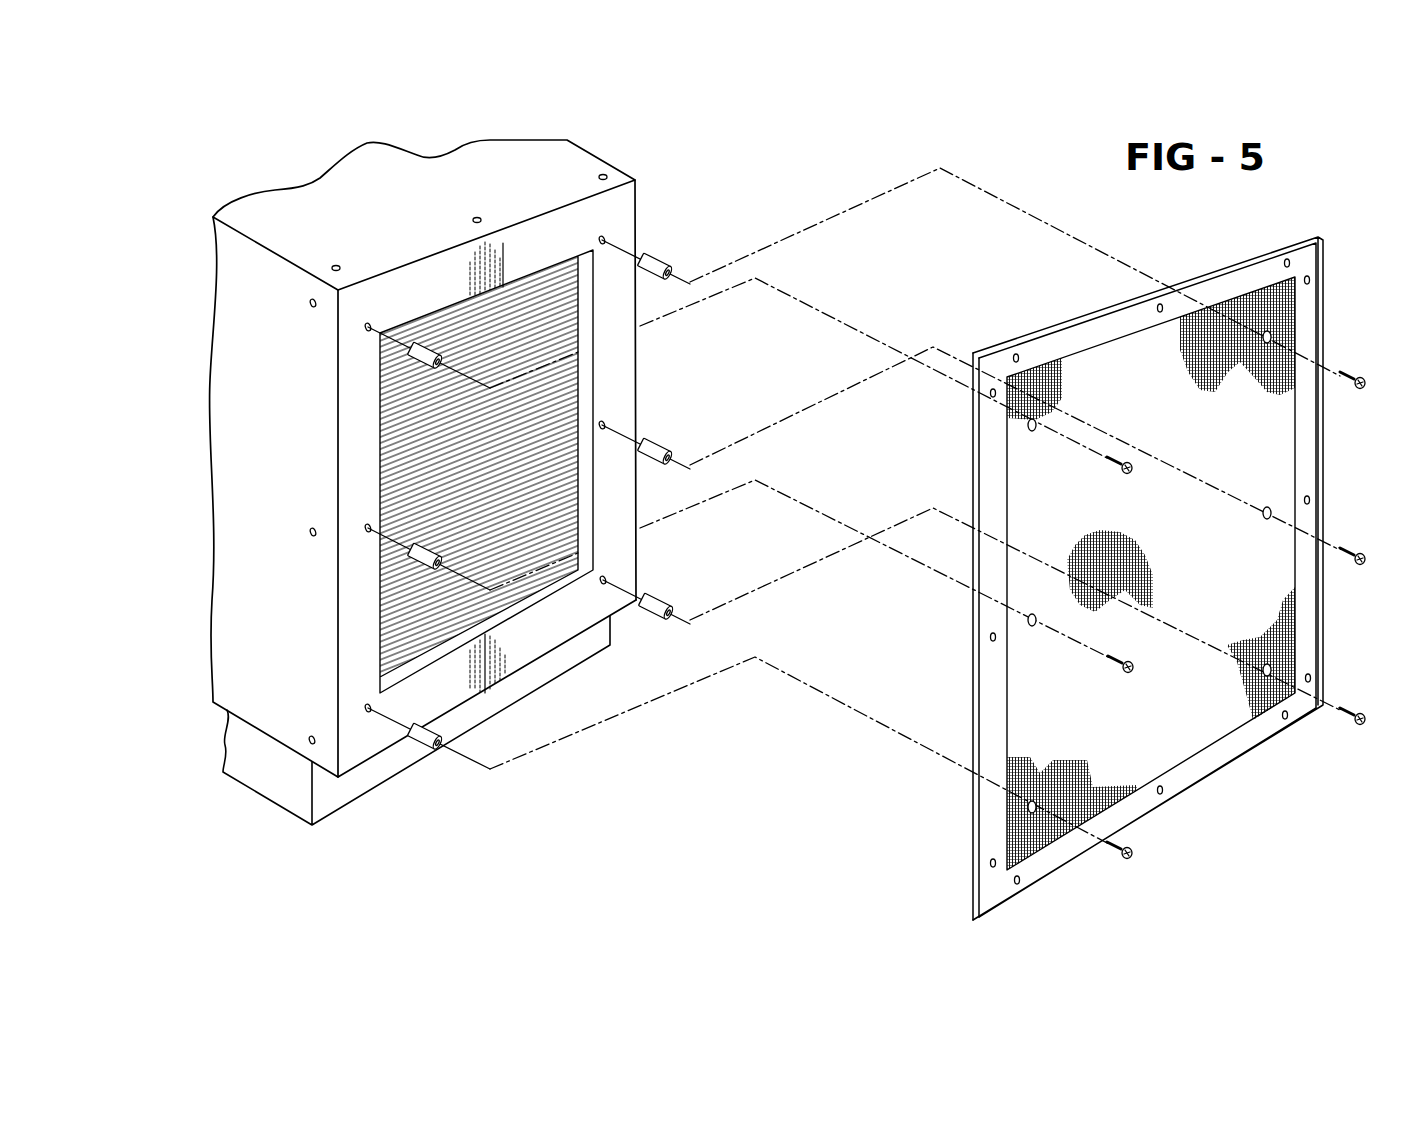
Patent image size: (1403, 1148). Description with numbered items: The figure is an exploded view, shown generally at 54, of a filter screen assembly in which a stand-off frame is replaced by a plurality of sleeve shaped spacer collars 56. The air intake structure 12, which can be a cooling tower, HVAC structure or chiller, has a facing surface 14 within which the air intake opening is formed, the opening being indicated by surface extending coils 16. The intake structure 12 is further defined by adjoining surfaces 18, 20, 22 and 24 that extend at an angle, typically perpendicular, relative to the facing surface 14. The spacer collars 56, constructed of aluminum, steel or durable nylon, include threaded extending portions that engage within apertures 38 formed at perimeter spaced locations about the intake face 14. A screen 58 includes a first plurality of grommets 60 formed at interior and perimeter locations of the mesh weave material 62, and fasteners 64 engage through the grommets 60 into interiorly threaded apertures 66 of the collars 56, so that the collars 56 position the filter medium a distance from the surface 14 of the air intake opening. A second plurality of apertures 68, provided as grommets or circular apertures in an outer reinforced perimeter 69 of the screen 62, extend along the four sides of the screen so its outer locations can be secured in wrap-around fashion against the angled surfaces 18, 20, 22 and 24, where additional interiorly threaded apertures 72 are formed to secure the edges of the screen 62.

The air intake structure 12 is at (432, 463).
The facing surface 14 is at (479, 474).
The surface extending coils 16 is at (567, 422).
The adjoining surface 18 is at (585, 162).
The adjoining surface 20 is at (636, 550).
The adjoining surface 22 is at (543, 657).
The adjoining surface 24 is at (225, 497).
The apertures 38 is at (365, 327).
The exploded view of filter screen assembly 54 is at (672, 132).
The spacer collars 56 is at (422, 363).
The screen 58 is at (1097, 566).
The grommets 60 is at (1028, 428).
The mesh weave material 62 is at (1267, 300).
The fasteners 64 is at (1357, 389).
The interiorly threaded apertures 66 is at (670, 260).
The outer perimeter apertures 68 is at (1160, 304).
The outer reinforced perimeter 69 is at (985, 490).
The threaded apertures in sides 72 is at (477, 218).